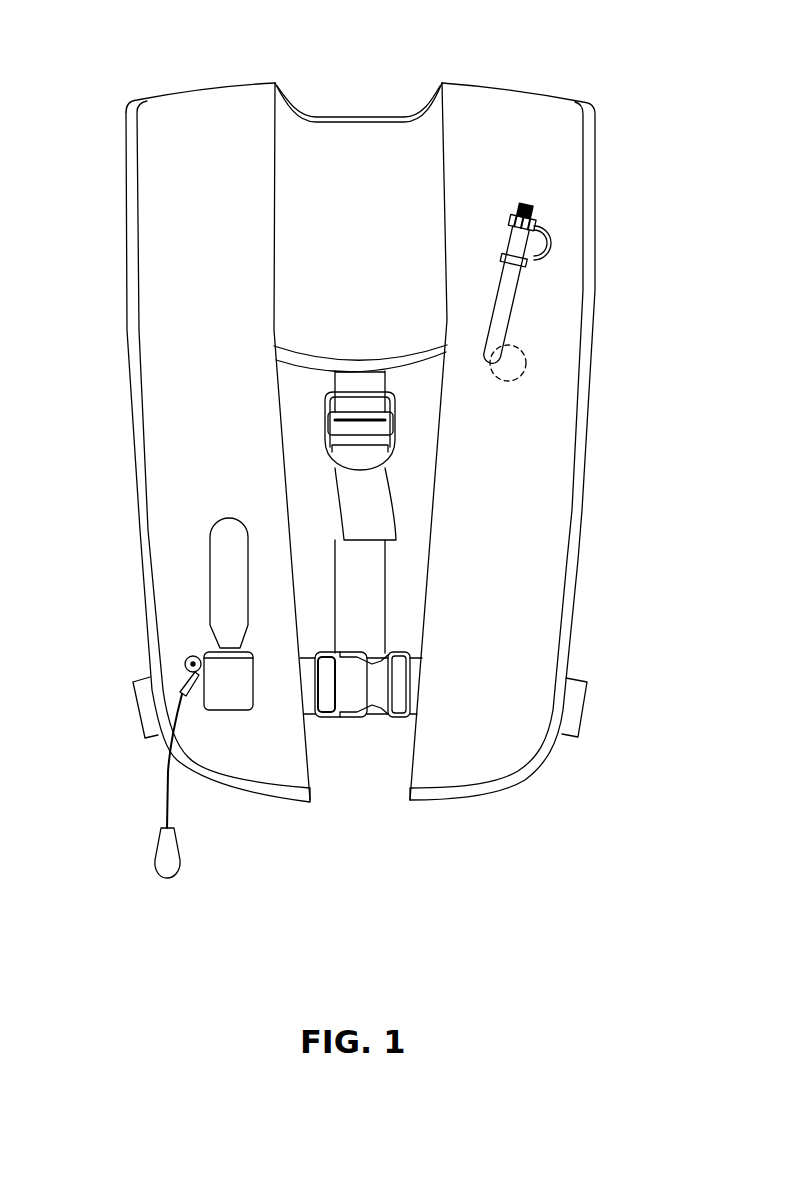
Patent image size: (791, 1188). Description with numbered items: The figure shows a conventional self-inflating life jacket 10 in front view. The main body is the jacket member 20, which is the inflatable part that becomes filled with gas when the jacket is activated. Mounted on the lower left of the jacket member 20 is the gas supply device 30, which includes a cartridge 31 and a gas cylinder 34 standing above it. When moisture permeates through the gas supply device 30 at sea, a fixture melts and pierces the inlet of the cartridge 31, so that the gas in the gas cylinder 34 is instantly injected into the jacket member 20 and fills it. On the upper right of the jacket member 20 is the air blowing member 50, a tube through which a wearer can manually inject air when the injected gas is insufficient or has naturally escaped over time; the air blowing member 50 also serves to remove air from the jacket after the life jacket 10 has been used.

The self-inflating life jacket 10 is at (497, 41).
The jacket member 20 is at (557, 486).
The gas supply device 30 is at (72, 552).
The cartridge 31 is at (217, 668).
The gas cylinder 34 is at (220, 562).
The air blowing member 50 is at (505, 303).